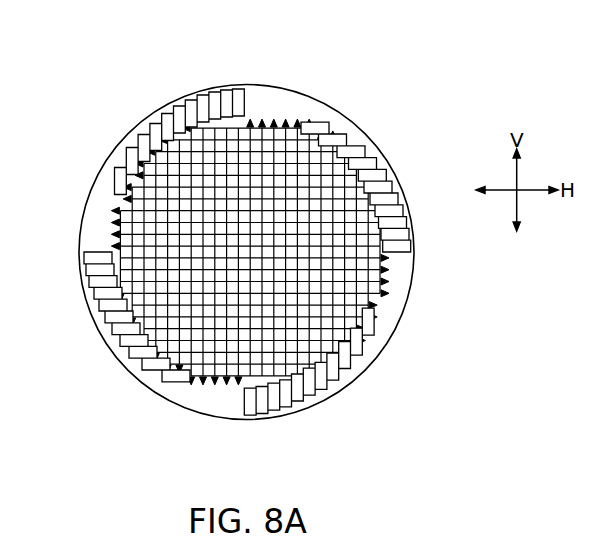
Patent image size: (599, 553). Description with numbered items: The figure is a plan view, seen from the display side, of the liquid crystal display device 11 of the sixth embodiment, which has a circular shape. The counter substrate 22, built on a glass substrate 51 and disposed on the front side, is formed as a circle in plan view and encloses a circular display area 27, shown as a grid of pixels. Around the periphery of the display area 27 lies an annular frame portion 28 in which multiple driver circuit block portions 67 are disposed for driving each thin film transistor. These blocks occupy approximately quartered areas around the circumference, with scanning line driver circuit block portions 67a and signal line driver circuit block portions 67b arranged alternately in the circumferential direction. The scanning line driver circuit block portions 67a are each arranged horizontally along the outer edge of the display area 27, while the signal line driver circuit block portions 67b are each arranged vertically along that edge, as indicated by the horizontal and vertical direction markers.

The liquid crystal display device 11 is at (336, 73).
The counter substrate 22 is at (403, 285).
The glass substrate 51 is at (246, 252).
The display area 27 is at (271, 114).
The frame portion 28 is at (306, 120).
The driver circuit block portions 67 is at (420, 262).
The scanning line driver circuit block portions 67a is at (365, 105).
The signal line driver circuit block portions 67b is at (222, 46).